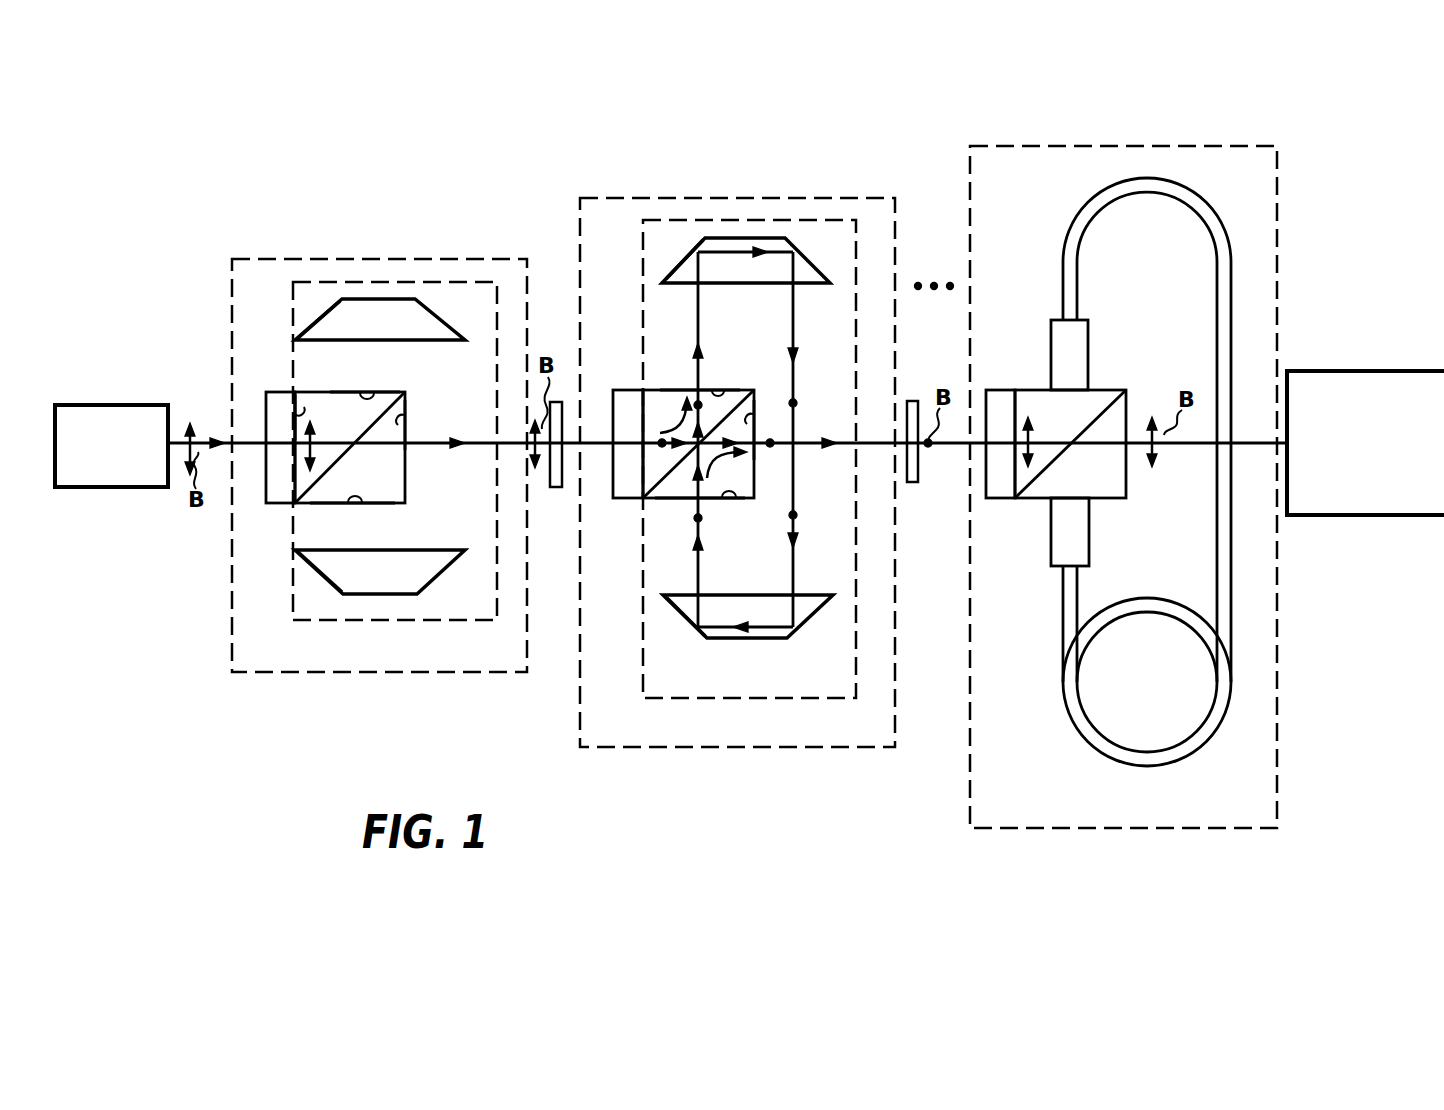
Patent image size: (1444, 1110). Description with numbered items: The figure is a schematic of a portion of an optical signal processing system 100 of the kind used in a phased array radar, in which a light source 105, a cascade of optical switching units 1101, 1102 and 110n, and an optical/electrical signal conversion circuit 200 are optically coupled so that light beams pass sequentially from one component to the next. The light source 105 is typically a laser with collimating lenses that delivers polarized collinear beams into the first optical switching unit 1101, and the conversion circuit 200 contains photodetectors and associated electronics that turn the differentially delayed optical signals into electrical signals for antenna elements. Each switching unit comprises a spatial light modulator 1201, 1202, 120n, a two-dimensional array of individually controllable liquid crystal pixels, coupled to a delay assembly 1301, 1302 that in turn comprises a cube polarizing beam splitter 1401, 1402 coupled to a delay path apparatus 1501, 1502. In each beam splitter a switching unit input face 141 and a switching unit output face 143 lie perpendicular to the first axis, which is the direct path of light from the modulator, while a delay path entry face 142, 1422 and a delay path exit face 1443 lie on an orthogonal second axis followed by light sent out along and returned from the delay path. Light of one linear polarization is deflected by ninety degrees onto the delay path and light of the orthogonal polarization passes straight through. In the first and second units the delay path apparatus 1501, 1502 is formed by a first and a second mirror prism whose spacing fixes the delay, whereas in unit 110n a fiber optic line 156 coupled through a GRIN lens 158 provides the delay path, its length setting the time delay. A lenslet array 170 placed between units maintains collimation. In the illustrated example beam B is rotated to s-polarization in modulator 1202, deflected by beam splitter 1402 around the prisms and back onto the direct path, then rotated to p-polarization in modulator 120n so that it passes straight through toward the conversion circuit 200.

The optical signal processing system 100 is at (198, 177).
The light source 105 is at (103, 404).
The first optical switching unit 1101 is at (251, 259).
The second optical switching unit 1102 is at (657, 197).
The nth optical switching unit 110n is at (1012, 144).
The spatial light modulator 1201 is at (280, 503).
The spatial light modulator 1202 is at (616, 426).
The spatial light modulator 120n is at (1002, 388).
The delay assembly 1301 is at (293, 310).
The delay assembly 1302 is at (642, 258).
The polarizing beam splitter 1401 is at (398, 483).
The polarizing beam splitter 1402 is at (656, 501).
The switching unit input face 141 is at (302, 407).
The delay path entry face 142 is at (379, 392).
The delay path entry face 1422 is at (721, 387).
The switching unit output face 143 is at (404, 426).
The delay path exit face 1443 is at (752, 420).
The delay path apparatus 1501 is at (442, 332).
The delay path apparatus 1502 is at (672, 273).
The fiber optic line 156 is at (1079, 268).
The lens 158 is at (1089, 362).
The lenslet array 170 is at (556, 489).
The optical/electrical signal conversion circuit 200 is at (1356, 370).